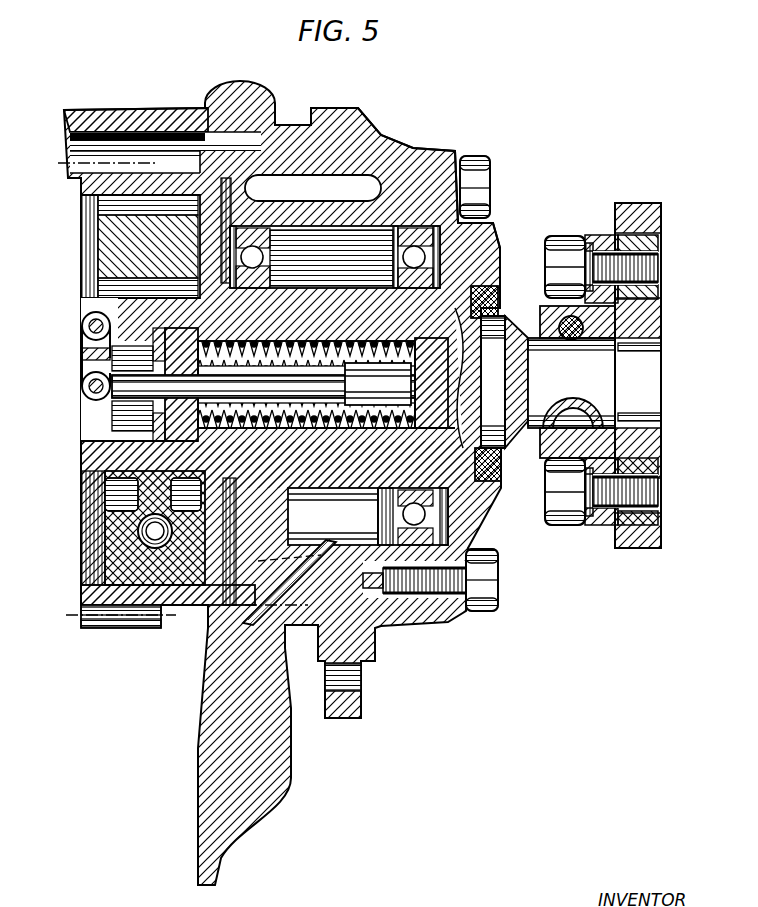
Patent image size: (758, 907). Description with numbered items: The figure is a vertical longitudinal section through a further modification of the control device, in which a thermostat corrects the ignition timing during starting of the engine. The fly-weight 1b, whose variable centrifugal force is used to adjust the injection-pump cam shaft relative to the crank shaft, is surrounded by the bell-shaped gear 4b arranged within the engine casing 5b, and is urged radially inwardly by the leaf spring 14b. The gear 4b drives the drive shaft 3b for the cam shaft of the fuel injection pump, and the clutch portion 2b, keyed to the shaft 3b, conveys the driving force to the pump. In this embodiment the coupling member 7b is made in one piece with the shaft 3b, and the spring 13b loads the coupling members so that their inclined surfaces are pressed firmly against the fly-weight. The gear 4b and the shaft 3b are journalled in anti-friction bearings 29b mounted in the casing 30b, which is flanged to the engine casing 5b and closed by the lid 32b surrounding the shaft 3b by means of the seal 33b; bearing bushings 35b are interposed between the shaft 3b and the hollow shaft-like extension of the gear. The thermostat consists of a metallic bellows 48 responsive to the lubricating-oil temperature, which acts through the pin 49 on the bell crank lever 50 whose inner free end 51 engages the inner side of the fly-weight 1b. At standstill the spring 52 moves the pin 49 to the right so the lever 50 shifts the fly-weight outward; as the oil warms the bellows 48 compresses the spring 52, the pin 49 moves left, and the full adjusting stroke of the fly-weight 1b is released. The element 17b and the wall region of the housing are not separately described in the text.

The fly-weight 1b is at (100, 233).
The engine casing 5b is at (147, 106).
The leaf spring 14b is at (152, 205).
The casing 30b is at (357, 140).
The lid 32b is at (437, 143).
The anti-friction bearings 29b is at (457, 228).
The drive shaft 3b is at (503, 313).
The clutch portion 2b is at (557, 434).
The seal 33b is at (482, 478).
The bearing bushings 35b is at (417, 425).
The spring 52 is at (343, 363).
The metallic bellows 48 is at (353, 412).
The pin 49 is at (135, 392).
The bell crank lever 50 is at (72, 340).
The inner free end 51 is at (143, 337).
The lower wall 17b is at (100, 447).
The spring 13b is at (130, 523).
The coupling member 7b is at (78, 560).
The gear 4b is at (123, 613).